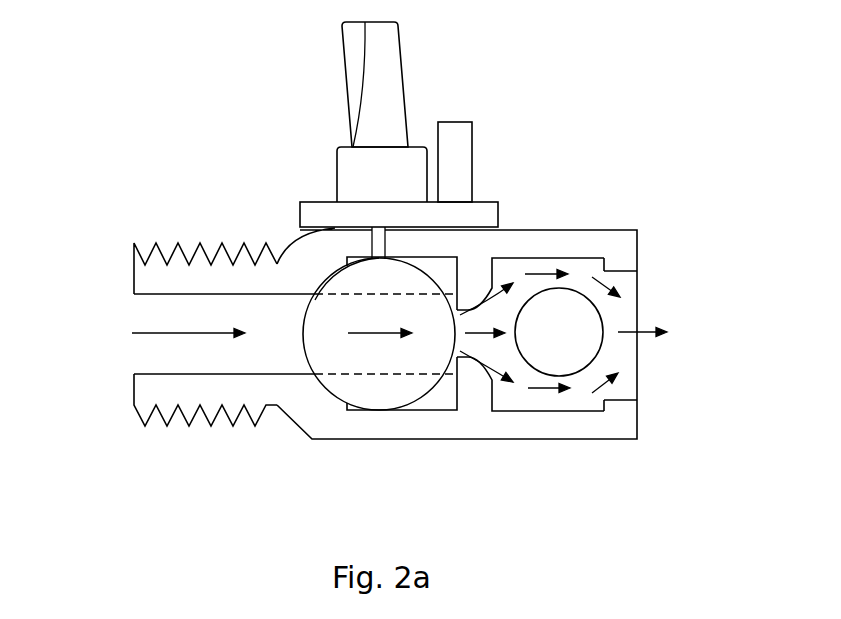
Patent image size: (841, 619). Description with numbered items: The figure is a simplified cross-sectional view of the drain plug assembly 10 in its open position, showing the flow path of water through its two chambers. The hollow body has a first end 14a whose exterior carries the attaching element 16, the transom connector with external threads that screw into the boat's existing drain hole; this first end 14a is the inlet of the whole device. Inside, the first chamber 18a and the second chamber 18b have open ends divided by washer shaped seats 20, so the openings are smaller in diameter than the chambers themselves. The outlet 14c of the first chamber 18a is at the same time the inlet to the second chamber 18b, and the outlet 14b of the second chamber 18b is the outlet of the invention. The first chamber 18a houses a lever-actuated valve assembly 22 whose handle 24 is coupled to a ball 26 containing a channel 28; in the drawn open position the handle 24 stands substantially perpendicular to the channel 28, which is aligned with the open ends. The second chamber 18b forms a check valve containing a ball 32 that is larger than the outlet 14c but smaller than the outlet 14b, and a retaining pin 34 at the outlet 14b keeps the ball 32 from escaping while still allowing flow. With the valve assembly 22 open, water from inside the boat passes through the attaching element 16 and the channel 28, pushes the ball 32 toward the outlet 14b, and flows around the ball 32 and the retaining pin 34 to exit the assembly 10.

The assembly 10 is at (168, 103).
The first end 14a is at (135, 352).
The outlet 14b is at (645, 283).
The outlet of the first chamber 14c is at (468, 352).
The attaching element 16 is at (152, 242).
The first chamber 18a is at (335, 270).
The second chamber 18b is at (558, 400).
The washer shaped seats 20 is at (478, 270).
The valve assembly 22 is at (333, 270).
The handle 24 is at (398, 75).
The ball 26 is at (350, 400).
The channel 28 is at (343, 353).
The ball 32 is at (580, 352).
The retaining pin 34 is at (637, 347).